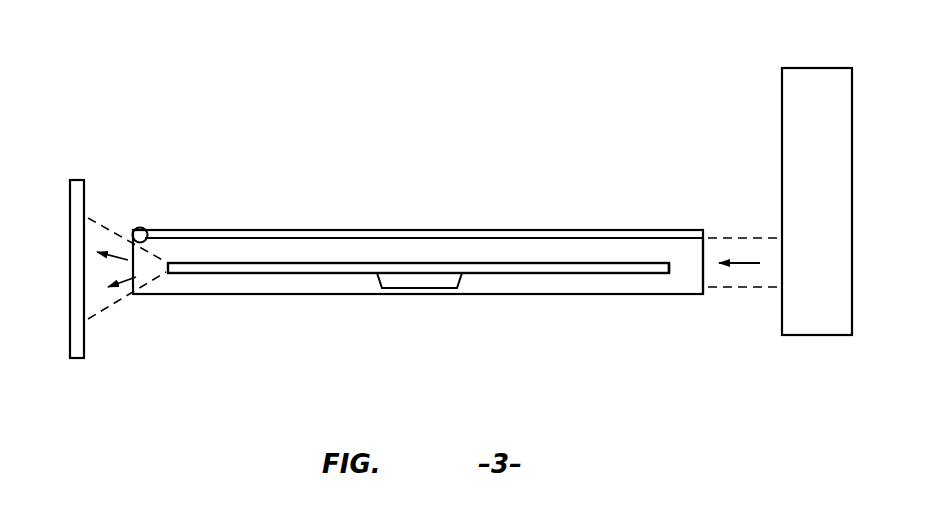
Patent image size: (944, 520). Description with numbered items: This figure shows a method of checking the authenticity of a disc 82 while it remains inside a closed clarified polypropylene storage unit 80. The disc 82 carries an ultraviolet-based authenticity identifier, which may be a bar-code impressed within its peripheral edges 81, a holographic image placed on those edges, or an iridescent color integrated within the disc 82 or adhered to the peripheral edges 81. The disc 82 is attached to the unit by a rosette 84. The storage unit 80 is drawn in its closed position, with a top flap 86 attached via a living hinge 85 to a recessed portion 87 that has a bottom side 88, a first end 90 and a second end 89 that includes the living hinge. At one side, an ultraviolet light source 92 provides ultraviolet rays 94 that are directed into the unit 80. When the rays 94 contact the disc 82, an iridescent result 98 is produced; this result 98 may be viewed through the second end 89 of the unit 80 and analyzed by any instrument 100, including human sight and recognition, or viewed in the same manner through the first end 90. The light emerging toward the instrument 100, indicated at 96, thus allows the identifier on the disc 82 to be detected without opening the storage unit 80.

The storage unit 80 is at (483, 230).
The peripheral edges 81 is at (670, 265).
The disc 82 is at (477, 268).
The rosette 84 is at (398, 283).
The living hinge 85 is at (141, 228).
The top flap 86 is at (290, 230).
The recessed portion 87 is at (640, 284).
The bottom side 88 is at (580, 294).
The second end 89 is at (130, 282).
The first end 90 is at (705, 277).
The ultraviolet light source 92 is at (805, 67).
The ultraviolet rays 94 is at (737, 238).
The emitted light rays 96 is at (146, 283).
The iridescent result 98 is at (105, 230).
The instrument 100 is at (68, 200).